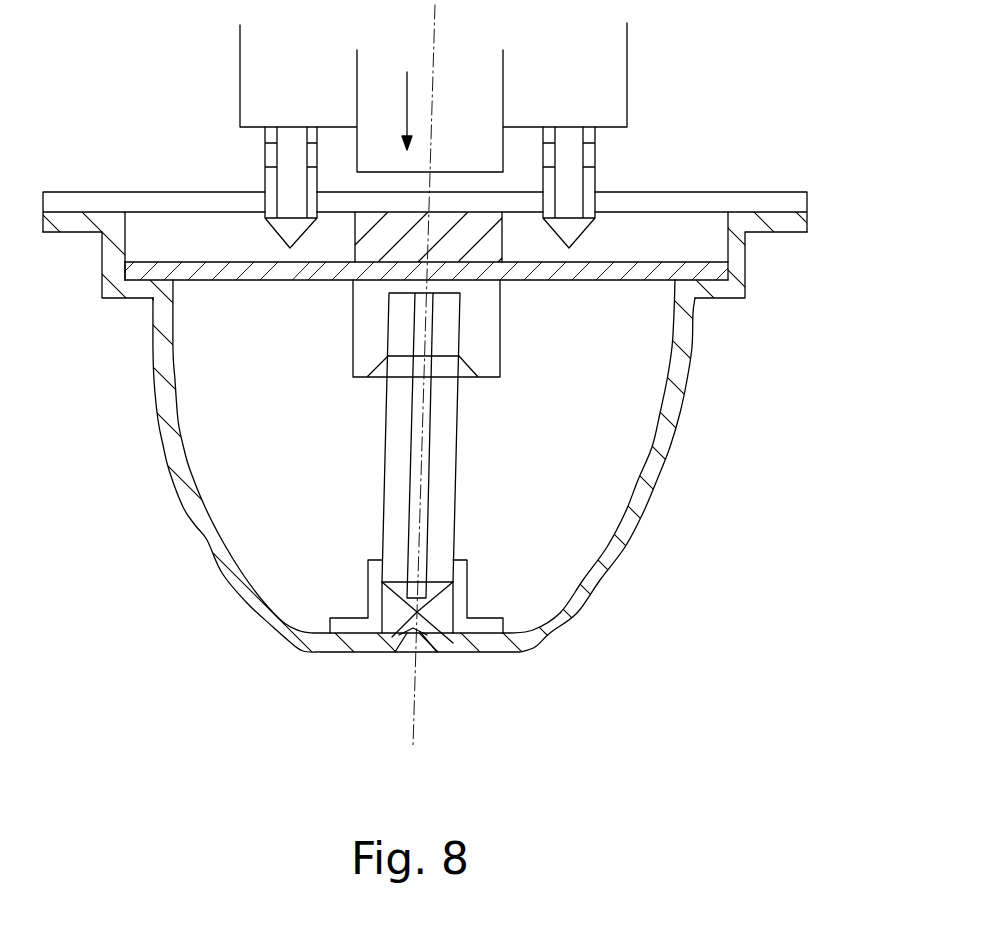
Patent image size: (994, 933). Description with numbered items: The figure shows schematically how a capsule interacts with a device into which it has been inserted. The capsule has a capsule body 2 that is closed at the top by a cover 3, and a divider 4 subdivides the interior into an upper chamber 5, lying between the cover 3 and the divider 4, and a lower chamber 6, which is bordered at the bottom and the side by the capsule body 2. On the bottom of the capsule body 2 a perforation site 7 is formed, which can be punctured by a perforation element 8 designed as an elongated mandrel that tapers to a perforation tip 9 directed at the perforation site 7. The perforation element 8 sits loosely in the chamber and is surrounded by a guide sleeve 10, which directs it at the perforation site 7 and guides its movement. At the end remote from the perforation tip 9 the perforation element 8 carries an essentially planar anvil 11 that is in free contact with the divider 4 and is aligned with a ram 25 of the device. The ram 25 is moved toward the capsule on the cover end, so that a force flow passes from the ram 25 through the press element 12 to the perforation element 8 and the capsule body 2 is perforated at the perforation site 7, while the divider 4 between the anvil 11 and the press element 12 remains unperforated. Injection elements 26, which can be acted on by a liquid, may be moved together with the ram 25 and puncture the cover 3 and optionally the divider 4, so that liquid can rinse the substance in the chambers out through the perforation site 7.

The capsule body 2 is at (660, 477).
The cover 3 is at (788, 203).
The divider 4 is at (205, 280).
The upper chamber 5 is at (595, 528).
The lower chamber 6 is at (720, 227).
The perforation site 7 is at (426, 662).
The perforation element 8 is at (443, 447).
The perforation tip 9 is at (388, 617).
The guide sleeve 10 is at (442, 605).
The anvil 11 is at (483, 340).
The press element 12 is at (152, 278).
The ram 25 is at (487, 97).
The injection elements 26 is at (264, 140).